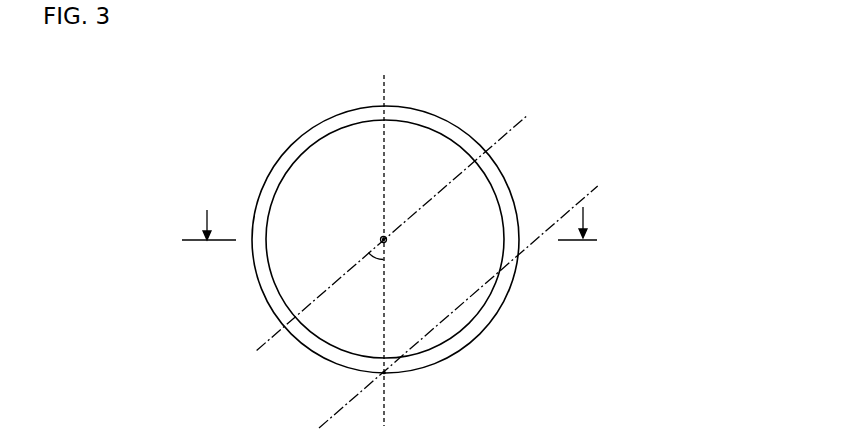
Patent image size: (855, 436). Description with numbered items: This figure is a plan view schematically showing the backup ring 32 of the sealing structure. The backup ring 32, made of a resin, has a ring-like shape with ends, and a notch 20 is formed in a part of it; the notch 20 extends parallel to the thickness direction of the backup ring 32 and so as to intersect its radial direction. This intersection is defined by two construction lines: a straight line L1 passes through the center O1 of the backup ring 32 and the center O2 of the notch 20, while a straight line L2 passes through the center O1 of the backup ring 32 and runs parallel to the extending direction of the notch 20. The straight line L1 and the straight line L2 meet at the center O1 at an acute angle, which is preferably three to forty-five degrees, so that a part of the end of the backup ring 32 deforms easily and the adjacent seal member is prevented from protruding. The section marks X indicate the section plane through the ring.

The backup ring 32 is at (673, 121).
The notch 20 is at (389, 366).
The straight line L1 is at (384, 92).
The straight line L2 is at (497, 141).
The center of the backup ring O1 is at (384, 240).
The center of the notch O2 is at (382, 368).
The section line X- X is at (392, 218).